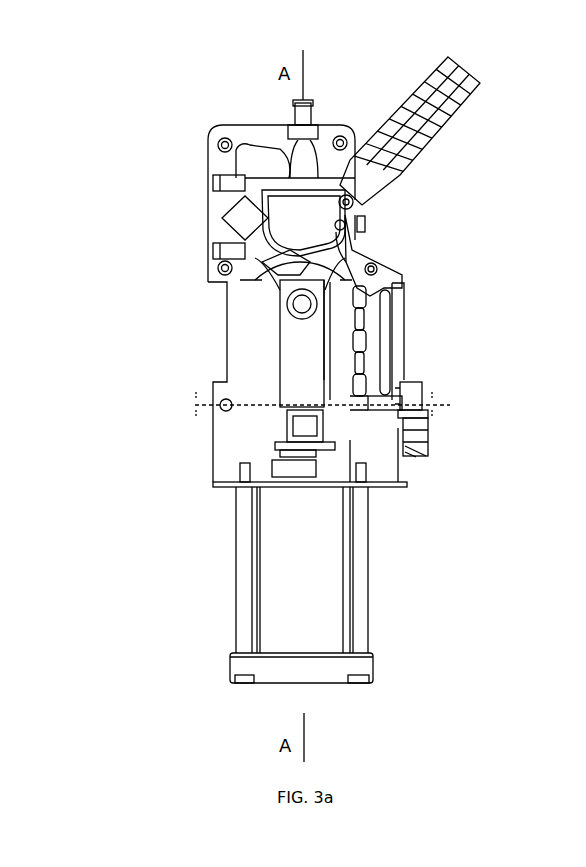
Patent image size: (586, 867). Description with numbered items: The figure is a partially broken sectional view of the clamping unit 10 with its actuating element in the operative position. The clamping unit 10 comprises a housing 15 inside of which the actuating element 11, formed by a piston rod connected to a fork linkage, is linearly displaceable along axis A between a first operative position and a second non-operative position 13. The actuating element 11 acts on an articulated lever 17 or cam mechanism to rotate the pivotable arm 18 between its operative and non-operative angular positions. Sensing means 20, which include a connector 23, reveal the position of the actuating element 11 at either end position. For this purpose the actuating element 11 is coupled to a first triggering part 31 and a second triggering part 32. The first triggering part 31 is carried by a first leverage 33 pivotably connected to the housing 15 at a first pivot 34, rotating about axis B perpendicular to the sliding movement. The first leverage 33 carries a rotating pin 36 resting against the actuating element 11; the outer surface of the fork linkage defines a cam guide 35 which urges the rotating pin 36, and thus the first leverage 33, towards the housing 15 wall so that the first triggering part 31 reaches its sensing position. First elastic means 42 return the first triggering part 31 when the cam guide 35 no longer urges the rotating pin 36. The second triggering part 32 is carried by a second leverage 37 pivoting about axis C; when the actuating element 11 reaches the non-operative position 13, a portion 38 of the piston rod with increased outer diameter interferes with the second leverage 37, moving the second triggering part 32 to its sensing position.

The clamping unit 10 is at (163, 99).
The actuating element 11 is at (279, 353).
The second non-operative position 13 is at (270, 440).
The housing 15 is at (227, 323).
The articulated lever 17 is at (255, 282).
The pivotable arm 18 is at (418, 80).
The sensing means 20 is at (421, 381).
The connector 23 is at (422, 448).
The first triggering part 31 is at (382, 398).
The second triggering part 32 is at (398, 411).
The first leverage 33 is at (358, 297).
The first pivot 34 is at (352, 202).
The cam guide 35 is at (322, 378).
The rotating pin 36 is at (340, 248).
The second leverage 37 is at (362, 453).
The portion of the piston rod having increased outer diameter 38 is at (285, 453).
The first elastic means 42 is at (362, 223).